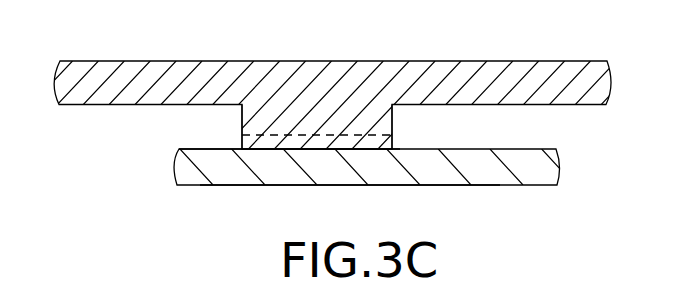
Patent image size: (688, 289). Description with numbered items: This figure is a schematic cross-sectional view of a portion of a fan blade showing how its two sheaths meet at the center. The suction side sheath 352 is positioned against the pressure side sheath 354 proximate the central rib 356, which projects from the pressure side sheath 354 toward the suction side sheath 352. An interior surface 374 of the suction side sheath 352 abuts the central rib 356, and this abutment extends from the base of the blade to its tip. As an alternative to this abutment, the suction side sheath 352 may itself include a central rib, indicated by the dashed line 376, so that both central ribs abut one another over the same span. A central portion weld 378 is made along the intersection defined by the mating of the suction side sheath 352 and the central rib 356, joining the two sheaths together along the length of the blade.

The pressure side sheath 354 is at (124, 76).
The central rib 356 is at (383, 123).
The dashed line 376 is at (254, 134).
The suction side sheath 352 is at (536, 174).
The interior surface 374 is at (198, 157).
The central portion weld 378 is at (290, 168).